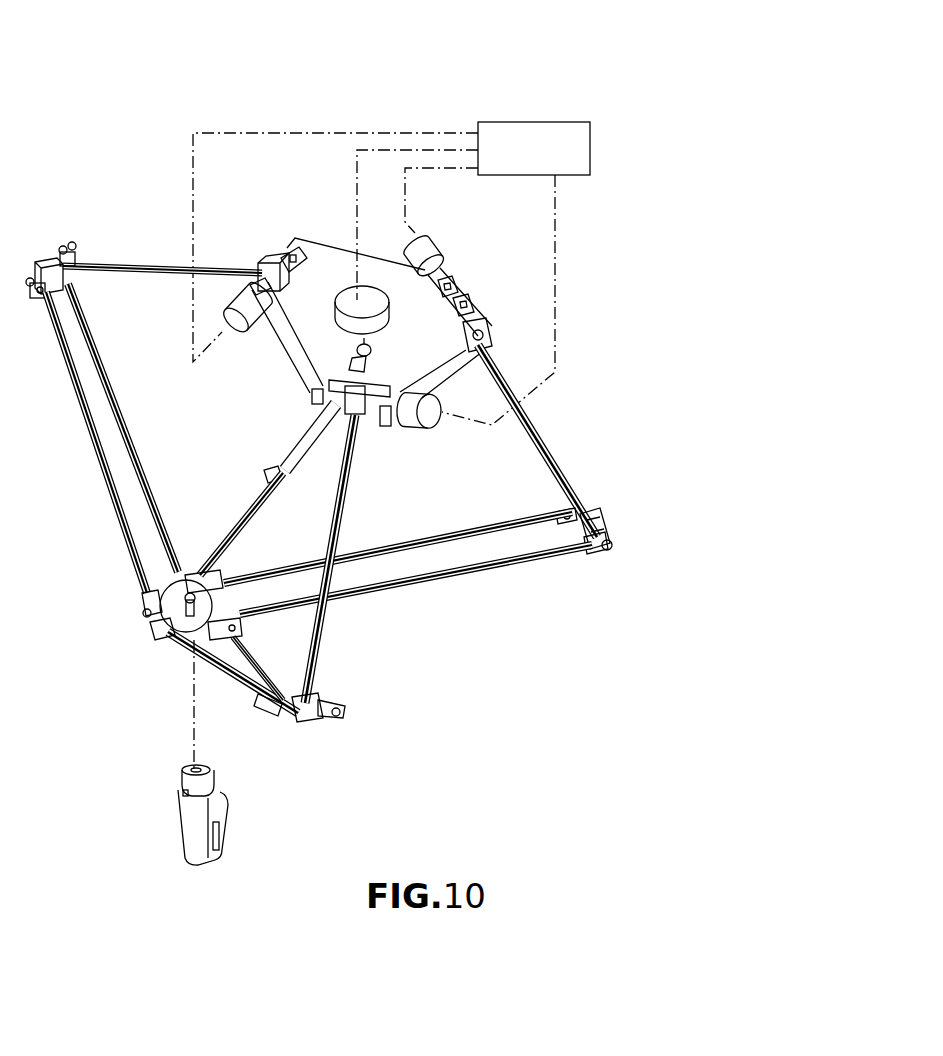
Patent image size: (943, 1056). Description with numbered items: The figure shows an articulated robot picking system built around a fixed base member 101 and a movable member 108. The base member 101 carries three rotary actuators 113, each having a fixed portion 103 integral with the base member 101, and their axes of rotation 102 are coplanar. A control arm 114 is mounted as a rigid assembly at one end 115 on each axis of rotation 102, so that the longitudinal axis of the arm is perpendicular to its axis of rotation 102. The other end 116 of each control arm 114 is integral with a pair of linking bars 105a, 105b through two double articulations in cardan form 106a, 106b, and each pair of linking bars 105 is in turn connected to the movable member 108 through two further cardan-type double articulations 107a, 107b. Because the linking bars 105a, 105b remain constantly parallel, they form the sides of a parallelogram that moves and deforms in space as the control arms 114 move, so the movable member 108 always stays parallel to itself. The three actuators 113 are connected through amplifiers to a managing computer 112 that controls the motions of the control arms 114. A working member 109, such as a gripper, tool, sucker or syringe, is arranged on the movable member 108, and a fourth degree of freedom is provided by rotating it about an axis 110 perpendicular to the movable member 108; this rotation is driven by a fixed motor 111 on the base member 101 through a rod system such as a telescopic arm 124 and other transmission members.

The base member 101 is at (339, 262).
The axis of rotation 102 is at (456, 284).
The fixed portion 103 is at (438, 258).
The linking bars 105 is at (380, 568).
The linking bar 105a is at (405, 593).
The linking bar 105b is at (393, 548).
The double articulation in cardan form 106a is at (593, 551).
The double articulation in cardan form 106b is at (560, 514).
The double articulation of cardan type 107a is at (228, 633).
The double articulation of cardan type 107b is at (200, 573).
The movable member 108 is at (166, 587).
The working member 109 is at (190, 838).
The axis 110 is at (193, 717).
The fixed motor 111 is at (341, 326).
The managing computer 112 is at (512, 130).
The rotary actuator 113 is at (268, 247).
The control arm 114 is at (540, 430).
The one end of control arm 115 is at (470, 296).
The other end of control arm 116 is at (593, 527).
The telescopic arm 124 is at (256, 496).